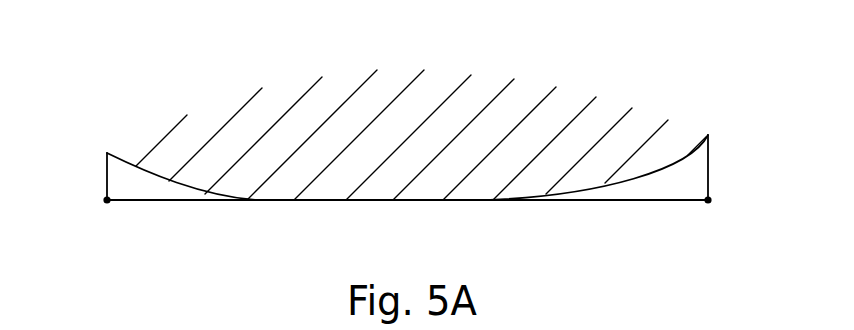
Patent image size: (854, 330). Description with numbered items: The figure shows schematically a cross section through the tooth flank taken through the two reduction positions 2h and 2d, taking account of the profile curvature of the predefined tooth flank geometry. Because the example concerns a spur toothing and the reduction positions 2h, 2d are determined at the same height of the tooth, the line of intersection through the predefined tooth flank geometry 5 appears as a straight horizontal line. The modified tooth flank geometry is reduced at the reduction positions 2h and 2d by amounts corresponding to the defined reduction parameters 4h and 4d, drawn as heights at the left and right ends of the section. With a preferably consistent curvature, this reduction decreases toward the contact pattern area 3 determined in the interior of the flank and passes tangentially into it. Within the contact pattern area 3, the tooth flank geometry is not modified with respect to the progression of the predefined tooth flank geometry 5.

The reduction position 2h is at (106, 202).
The reduction position 2d is at (710, 201).
The contact pattern area 3 is at (479, 190).
The reduction parameter 4h is at (100, 154).
The reduction parameter 4d is at (716, 137).
The predefined tooth flank geometry 5 is at (548, 200).